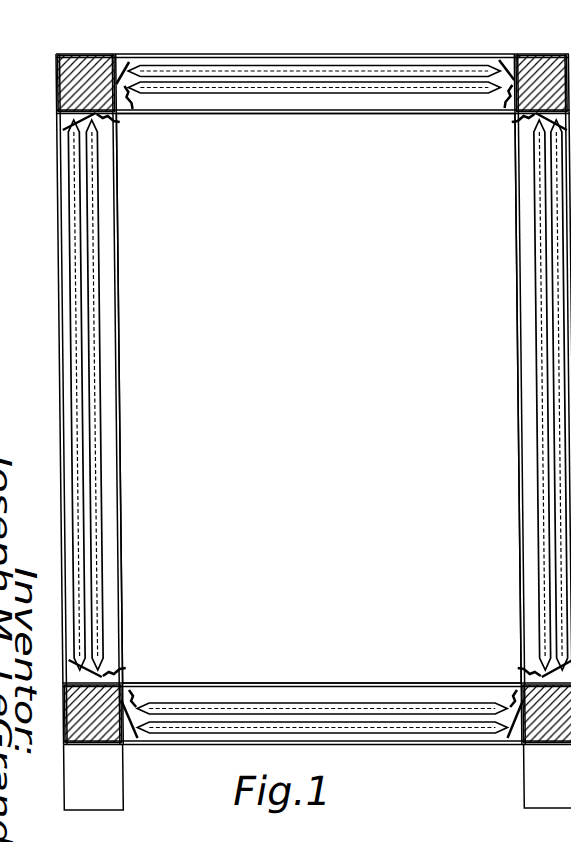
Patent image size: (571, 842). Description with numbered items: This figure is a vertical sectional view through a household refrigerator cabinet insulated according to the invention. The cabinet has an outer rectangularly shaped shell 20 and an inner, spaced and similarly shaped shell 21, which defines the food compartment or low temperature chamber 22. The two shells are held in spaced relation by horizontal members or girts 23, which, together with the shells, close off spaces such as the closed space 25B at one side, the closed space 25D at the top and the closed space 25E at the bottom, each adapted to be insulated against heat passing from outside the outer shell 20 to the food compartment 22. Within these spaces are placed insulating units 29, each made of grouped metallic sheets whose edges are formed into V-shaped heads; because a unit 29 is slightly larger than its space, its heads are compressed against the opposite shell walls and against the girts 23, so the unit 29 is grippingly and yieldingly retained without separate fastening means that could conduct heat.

The outer shell 20 is at (55, 262).
The inner shell 21 is at (117, 267).
The food compartment 22 is at (318, 399).
The horizontal members or girts 23 is at (60, 79).
The closed space 25B is at (68, 206).
The closed space 25D is at (370, 66).
The closed space 25E is at (386, 727).
The insulating unit 29 is at (308, 98).